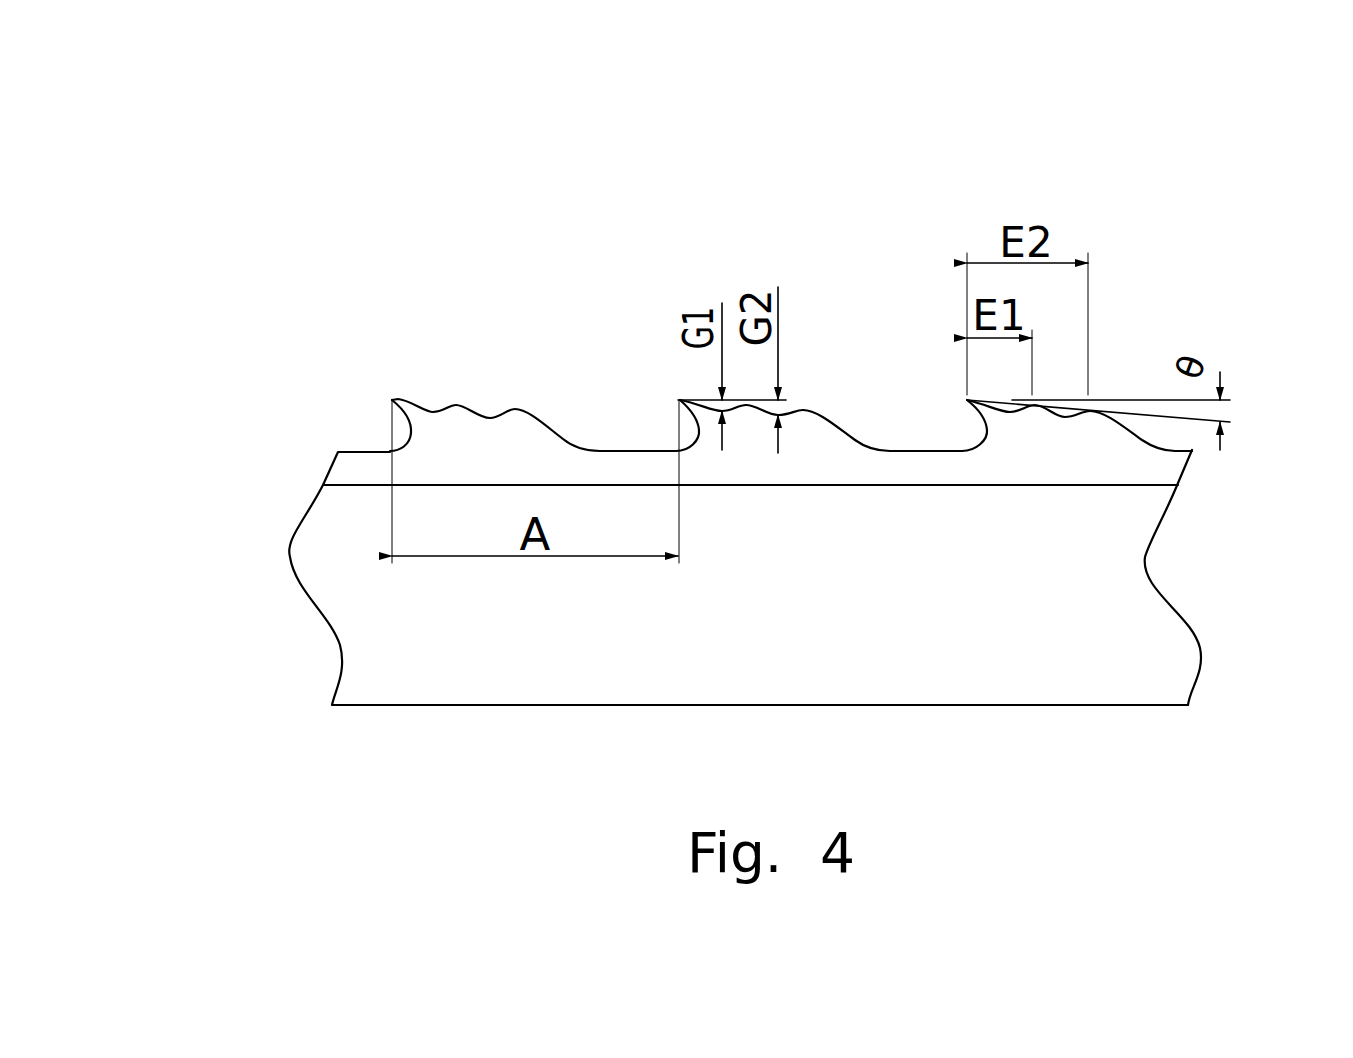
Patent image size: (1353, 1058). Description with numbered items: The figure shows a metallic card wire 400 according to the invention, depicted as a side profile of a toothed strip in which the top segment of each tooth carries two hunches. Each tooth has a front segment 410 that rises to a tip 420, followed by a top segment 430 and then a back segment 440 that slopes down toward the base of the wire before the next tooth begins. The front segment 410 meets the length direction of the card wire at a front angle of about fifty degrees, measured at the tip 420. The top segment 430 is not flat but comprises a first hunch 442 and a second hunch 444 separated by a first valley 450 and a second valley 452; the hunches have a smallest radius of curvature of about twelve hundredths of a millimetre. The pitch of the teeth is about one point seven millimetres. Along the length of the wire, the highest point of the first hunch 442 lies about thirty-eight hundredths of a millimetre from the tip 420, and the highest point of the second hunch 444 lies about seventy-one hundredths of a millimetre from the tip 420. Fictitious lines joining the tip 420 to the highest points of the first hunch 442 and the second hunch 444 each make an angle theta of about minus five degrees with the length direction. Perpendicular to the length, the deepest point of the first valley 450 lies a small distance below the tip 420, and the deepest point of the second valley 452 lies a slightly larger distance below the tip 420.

The metallic card wire 400 is at (1214, 161).
The front segment 410 is at (386, 423).
The tip 420 is at (390, 400).
The top segment 430 is at (432, 411).
The back segment 440 is at (844, 416).
The first hunch 442 is at (455, 406).
The second hunch 444 is at (515, 409).
The first valley 450 is at (435, 392).
The second valley 452 is at (490, 417).